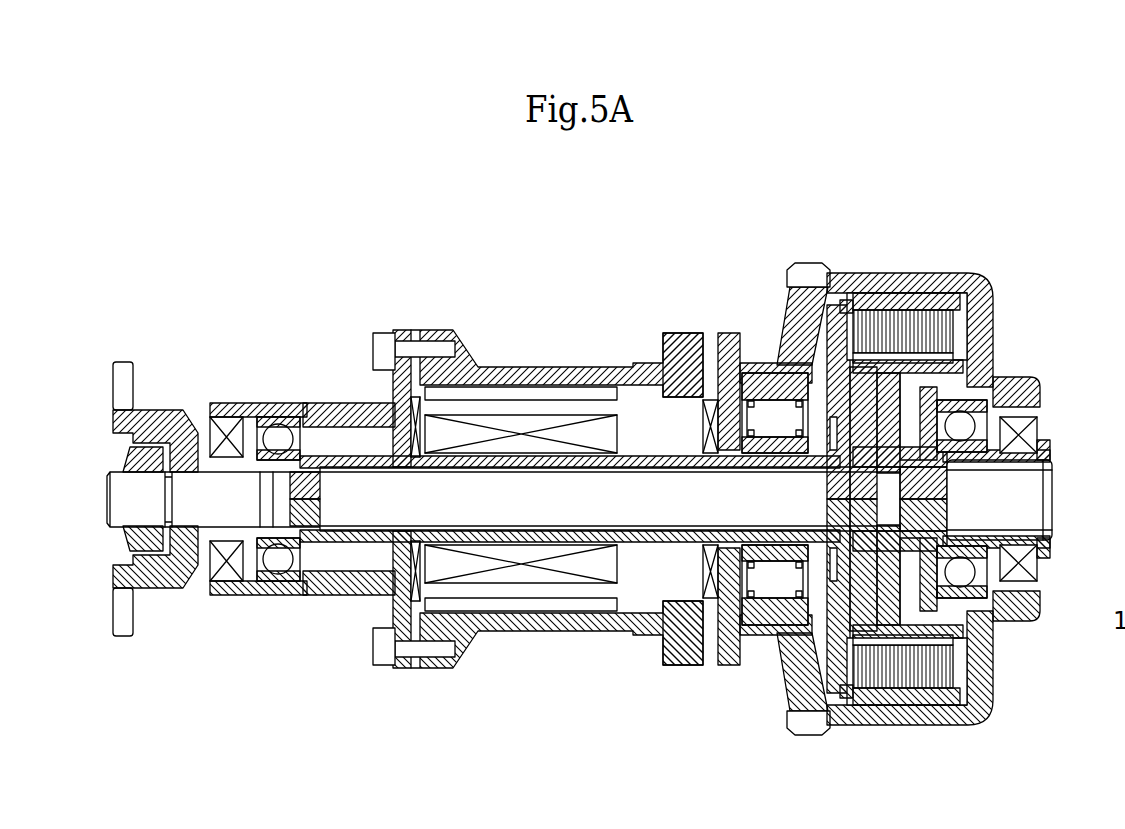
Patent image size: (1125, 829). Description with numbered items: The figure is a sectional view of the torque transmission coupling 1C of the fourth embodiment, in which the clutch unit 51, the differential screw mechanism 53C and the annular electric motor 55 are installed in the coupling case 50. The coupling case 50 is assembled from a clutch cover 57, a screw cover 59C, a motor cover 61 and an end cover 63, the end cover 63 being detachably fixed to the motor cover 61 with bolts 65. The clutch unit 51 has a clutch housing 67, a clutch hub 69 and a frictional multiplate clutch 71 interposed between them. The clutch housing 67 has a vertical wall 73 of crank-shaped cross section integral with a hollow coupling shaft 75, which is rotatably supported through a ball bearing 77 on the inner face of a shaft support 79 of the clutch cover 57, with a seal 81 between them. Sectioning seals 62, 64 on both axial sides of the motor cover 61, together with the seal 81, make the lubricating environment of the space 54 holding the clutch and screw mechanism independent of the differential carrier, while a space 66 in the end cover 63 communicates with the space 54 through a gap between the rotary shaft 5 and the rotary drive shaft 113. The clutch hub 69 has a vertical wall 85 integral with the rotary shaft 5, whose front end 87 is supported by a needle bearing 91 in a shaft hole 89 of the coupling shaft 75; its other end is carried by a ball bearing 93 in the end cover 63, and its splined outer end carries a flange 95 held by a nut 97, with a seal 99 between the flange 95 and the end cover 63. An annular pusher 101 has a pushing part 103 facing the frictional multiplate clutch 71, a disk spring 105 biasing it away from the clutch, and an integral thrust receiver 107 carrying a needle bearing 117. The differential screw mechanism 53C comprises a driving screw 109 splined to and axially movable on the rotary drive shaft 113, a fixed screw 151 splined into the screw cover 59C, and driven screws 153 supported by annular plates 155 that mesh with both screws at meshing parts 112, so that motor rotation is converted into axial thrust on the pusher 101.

The torque transmission coupling 1C is at (845, 225).
The rotary shaft 5 is at (495, 490).
The coupling case 50 is at (958, 278).
The clutch unit 51 is at (985, 285).
The differential screw mechanism 53C is at (735, 345).
The space 54 is at (820, 727).
The electric motor 55 is at (533, 390).
The clutch cover 57 is at (985, 300).
The screw cover 59C is at (778, 365).
The motor cover 61 is at (566, 360).
The sectioning seal 62 is at (700, 572).
The end cover 63 is at (340, 403).
The sectioning seal 64 is at (378, 612).
The bolt 65 is at (383, 338).
The space 66 is at (322, 582).
The clutch housing 67 is at (905, 315).
The clutch hub 69 is at (995, 360).
The frictional multiplate clutch 71 is at (925, 350).
The vertical wall 73 is at (990, 330).
The coupling shaft 75 is at (1045, 432).
The ball bearing 77 is at (1000, 380).
The shaft support 79 is at (1010, 400).
The seal 81 is at (1015, 420).
The vertical wall 85 is at (878, 445).
The front end 87 is at (930, 500).
The shaft hole 89 is at (1000, 555).
The needle bearing 91 is at (950, 480).
The ball bearing 93 is at (288, 417).
The flange 95 is at (125, 362).
The nut 97 is at (148, 455).
The seal 99 is at (224, 425).
The pusher 101 is at (815, 263).
The pushing part 103 is at (850, 345).
The disk spring 105 is at (860, 310).
The thrust receiver 107 is at (840, 470).
The driving screw 109 is at (740, 462).
The meshing part 112 is at (772, 600).
The rotary drive shaft 113 is at (600, 447).
The needle bearing 117 is at (833, 432).
The fixed screw 151 is at (770, 395).
The driven screw 153 is at (760, 430).
The annular plate 155 is at (710, 432).